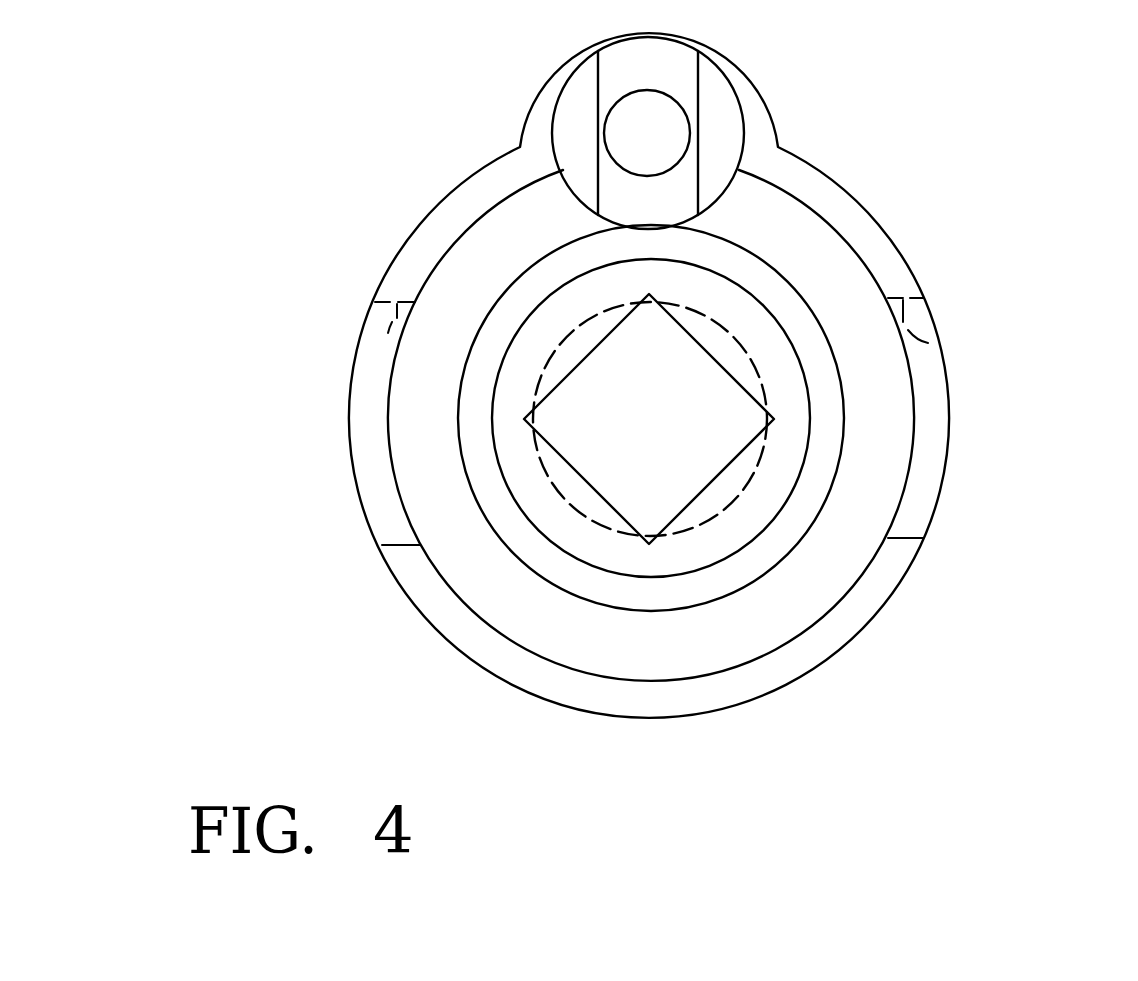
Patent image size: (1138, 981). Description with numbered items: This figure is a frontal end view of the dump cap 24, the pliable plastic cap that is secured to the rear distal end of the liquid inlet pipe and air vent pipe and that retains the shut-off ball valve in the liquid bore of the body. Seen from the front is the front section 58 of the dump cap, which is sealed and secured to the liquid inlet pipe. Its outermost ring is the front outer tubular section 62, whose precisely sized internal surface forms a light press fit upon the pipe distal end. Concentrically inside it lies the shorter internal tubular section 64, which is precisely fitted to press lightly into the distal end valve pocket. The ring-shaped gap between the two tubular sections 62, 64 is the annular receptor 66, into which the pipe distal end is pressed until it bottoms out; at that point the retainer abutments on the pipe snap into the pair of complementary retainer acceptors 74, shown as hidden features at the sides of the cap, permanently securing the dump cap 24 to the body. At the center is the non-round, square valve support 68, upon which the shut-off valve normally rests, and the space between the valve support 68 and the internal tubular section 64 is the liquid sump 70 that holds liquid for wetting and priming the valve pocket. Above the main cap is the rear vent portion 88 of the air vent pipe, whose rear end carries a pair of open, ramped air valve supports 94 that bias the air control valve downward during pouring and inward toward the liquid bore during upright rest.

The dump cap 24 is at (669, 422).
The front section 58 is at (730, 742).
The front outer tubular section 62 is at (780, 645).
The internal tubular section 64 is at (813, 527).
The annular receptor 66 is at (740, 429).
The valve support 68 is at (693, 340).
The liquid sump 70 is at (820, 435).
The retainer acceptors 74 is at (378, 342).
The rear vent portion 88 is at (663, 95).
The air valve supports 94 is at (587, 122).